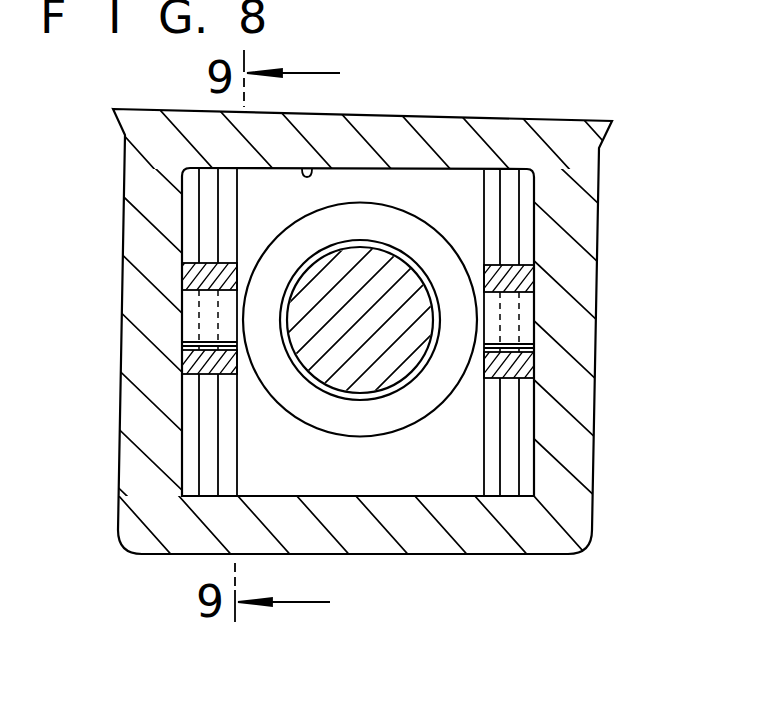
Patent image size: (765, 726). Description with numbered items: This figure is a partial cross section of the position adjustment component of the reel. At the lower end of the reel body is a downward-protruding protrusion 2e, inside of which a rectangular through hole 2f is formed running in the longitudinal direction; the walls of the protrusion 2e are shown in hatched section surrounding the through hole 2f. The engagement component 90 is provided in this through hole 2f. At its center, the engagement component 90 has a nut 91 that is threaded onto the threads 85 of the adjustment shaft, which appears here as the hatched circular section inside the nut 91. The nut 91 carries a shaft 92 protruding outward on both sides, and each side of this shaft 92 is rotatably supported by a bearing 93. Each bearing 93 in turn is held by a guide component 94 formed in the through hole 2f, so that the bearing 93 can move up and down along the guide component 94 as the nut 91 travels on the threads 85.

The protrusion 2e is at (573, 398).
The through hole 2f is at (311, 166).
The threads 85 is at (395, 280).
The engagement component 90 is at (622, 354).
The nut 91 is at (383, 218).
The shaft 92 is at (192, 300).
The bearing 93 is at (498, 269).
The guide component 94 is at (200, 393).